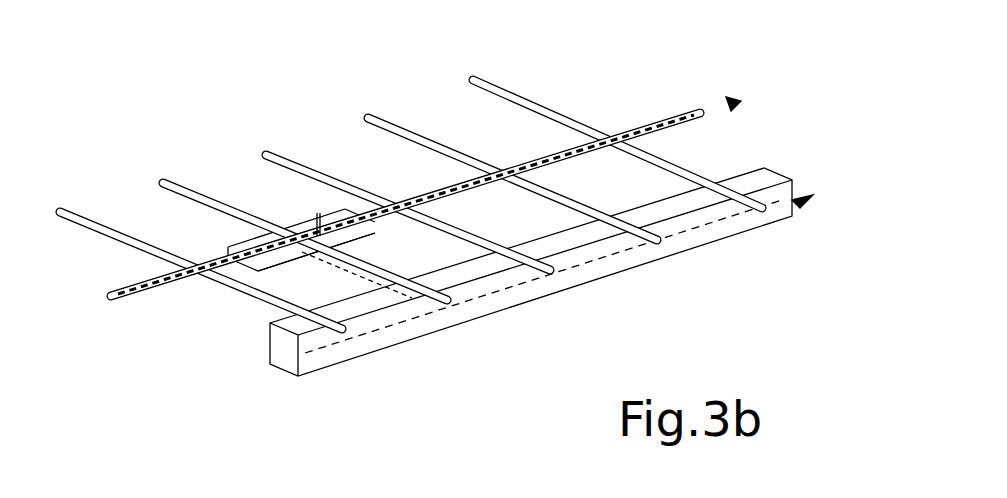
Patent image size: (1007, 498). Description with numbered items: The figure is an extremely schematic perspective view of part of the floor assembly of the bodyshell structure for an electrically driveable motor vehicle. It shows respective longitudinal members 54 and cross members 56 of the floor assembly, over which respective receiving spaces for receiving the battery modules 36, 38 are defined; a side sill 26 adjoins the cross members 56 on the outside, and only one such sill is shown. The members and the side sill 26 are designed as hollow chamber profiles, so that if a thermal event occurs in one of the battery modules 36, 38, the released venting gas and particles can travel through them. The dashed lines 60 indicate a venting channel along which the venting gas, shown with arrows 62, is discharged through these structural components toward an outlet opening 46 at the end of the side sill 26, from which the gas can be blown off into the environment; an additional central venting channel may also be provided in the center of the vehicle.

The side sill 26 is at (497, 314).
The battery module 36 is at (343, 283).
The battery module 38 is at (343, 283).
The outlet opening 46 is at (700, 68).
The longitudinal member 54 is at (97, 217).
The cross member 56 is at (147, 291).
The dashed lines 60 is at (712, 112).
The arrows 62 is at (292, 289).